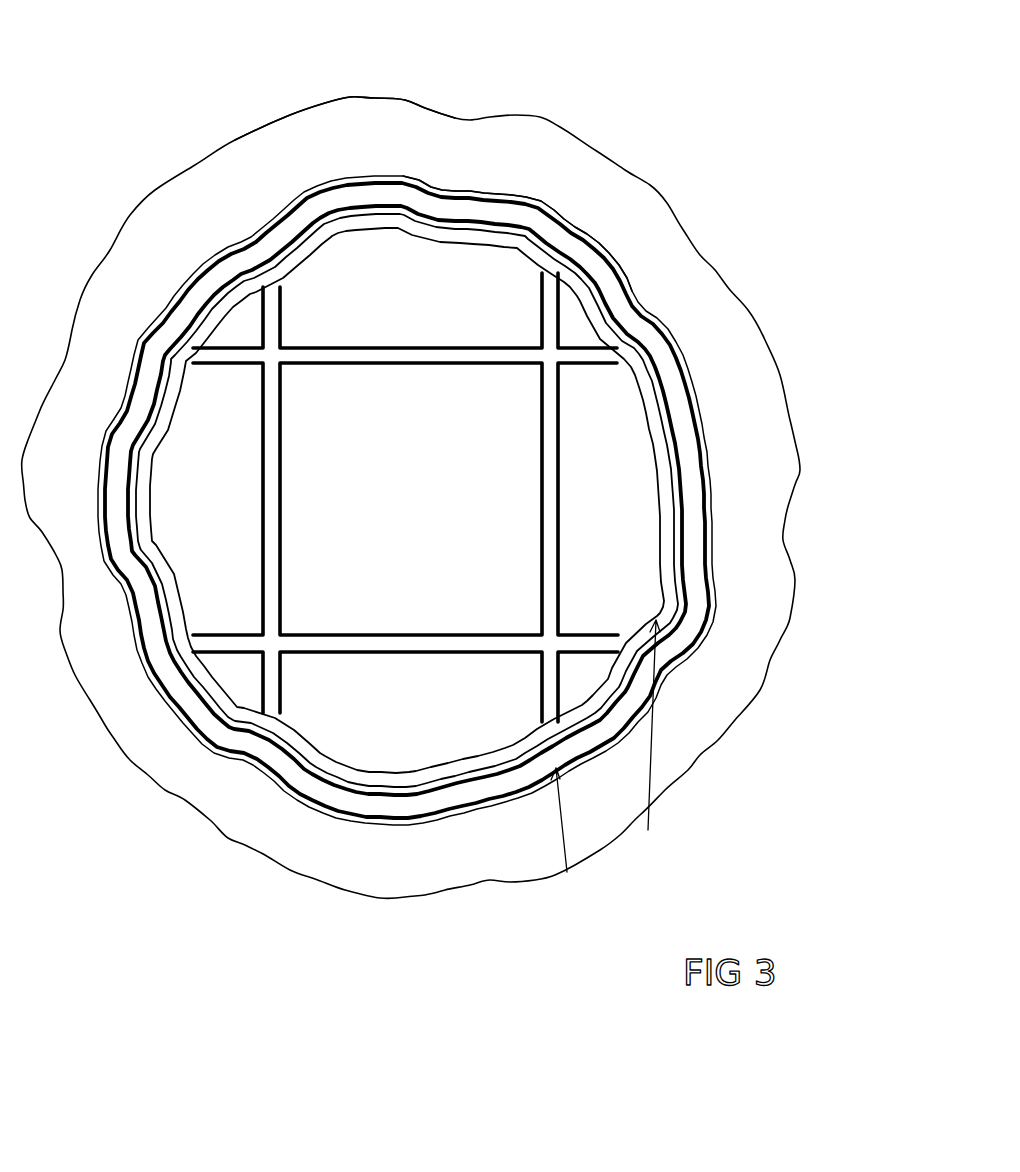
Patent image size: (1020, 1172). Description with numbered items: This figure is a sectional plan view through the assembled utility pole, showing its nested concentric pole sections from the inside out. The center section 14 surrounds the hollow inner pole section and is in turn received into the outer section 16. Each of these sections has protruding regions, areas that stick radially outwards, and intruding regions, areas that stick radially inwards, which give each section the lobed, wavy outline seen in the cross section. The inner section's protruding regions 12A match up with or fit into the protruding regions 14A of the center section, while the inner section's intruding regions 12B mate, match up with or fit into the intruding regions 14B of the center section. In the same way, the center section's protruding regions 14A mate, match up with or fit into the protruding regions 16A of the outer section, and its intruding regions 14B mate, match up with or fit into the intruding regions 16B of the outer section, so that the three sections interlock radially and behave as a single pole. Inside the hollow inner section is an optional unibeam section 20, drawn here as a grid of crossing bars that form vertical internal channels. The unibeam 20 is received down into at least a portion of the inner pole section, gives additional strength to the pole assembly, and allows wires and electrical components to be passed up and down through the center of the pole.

The protruding regions of inner section 12A is at (362, 230).
The intruding regions of inner section 12B is at (450, 240).
The center section 14 is at (407, 437).
The protruding regions of center section 14A is at (348, 200).
The intruding regions of center section 14B is at (452, 210).
The outer section 16 is at (627, 202).
The protruding regions of outer section 16A is at (348, 122).
The intruding regions of outer section 16B is at (474, 145).
The unibeam section 20 is at (541, 493).